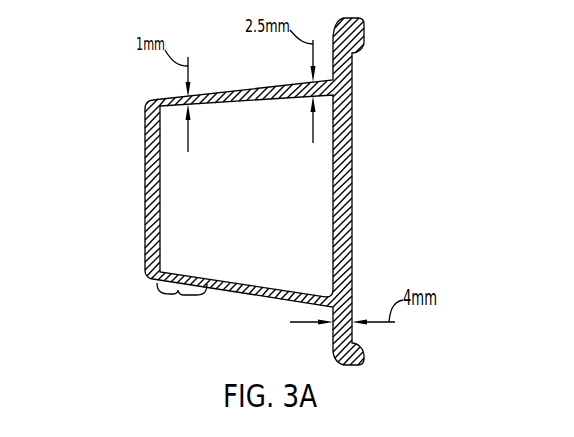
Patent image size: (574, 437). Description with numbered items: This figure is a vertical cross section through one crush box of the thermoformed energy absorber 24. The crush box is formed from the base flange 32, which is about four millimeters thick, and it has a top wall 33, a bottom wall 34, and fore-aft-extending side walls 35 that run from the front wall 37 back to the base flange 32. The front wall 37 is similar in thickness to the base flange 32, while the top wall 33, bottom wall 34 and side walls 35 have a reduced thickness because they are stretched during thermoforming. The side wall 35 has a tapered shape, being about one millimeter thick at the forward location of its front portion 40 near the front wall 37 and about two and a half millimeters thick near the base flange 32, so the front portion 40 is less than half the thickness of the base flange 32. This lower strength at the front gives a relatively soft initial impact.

The energy absorber 24 is at (106, 107).
The base flange 32 is at (355, 58).
The top wall 33 is at (242, 77).
The bottom wall 34 is at (222, 315).
The side wall 35 is at (258, 202).
The front wall 37 is at (145, 177).
The front portion 40 is at (178, 292).